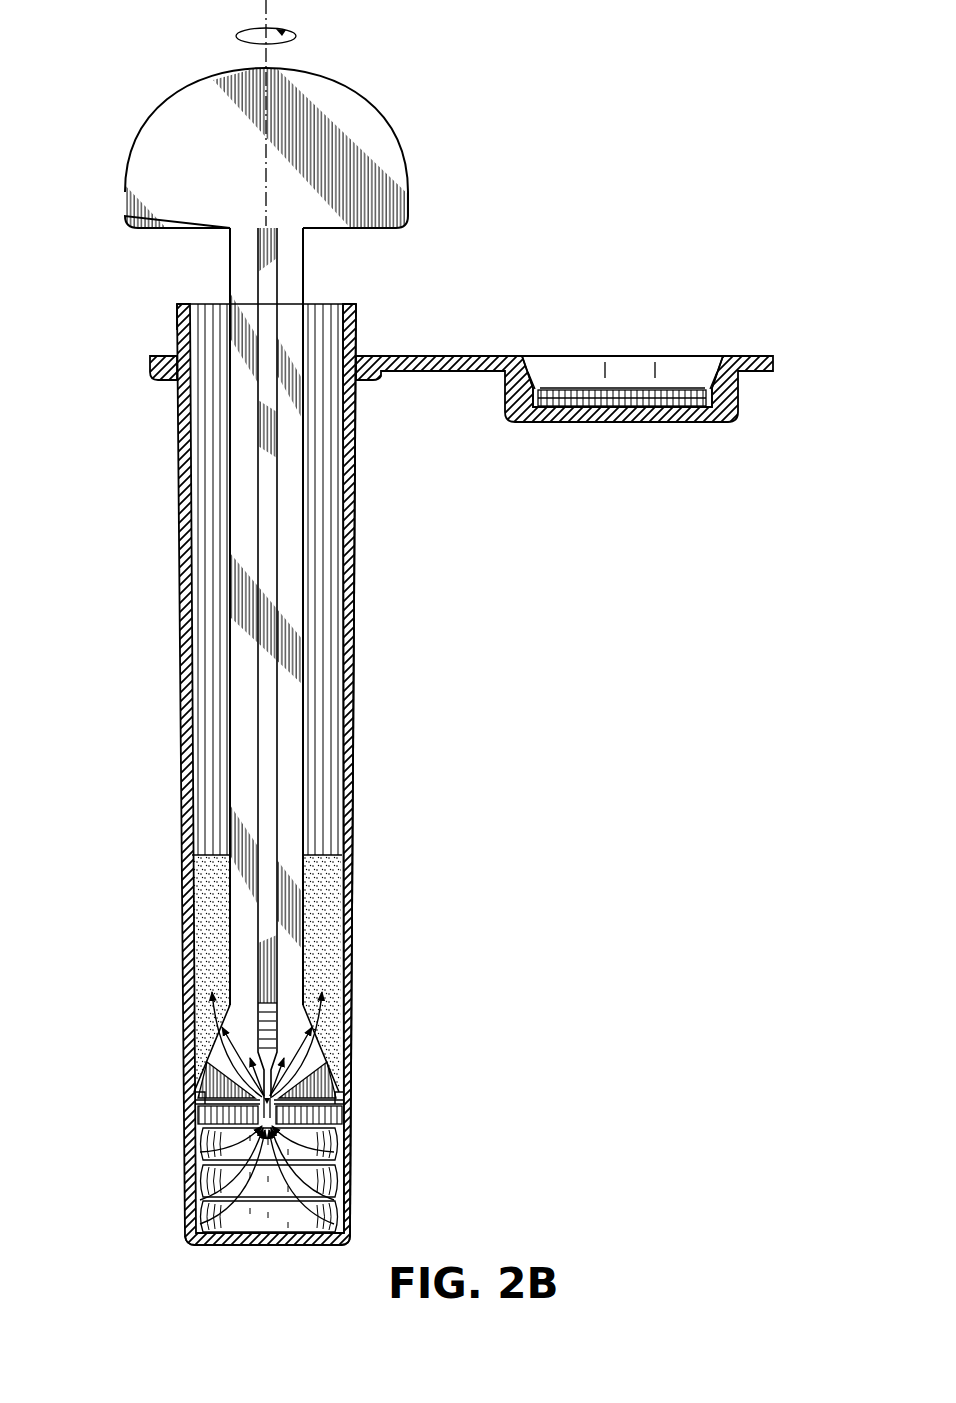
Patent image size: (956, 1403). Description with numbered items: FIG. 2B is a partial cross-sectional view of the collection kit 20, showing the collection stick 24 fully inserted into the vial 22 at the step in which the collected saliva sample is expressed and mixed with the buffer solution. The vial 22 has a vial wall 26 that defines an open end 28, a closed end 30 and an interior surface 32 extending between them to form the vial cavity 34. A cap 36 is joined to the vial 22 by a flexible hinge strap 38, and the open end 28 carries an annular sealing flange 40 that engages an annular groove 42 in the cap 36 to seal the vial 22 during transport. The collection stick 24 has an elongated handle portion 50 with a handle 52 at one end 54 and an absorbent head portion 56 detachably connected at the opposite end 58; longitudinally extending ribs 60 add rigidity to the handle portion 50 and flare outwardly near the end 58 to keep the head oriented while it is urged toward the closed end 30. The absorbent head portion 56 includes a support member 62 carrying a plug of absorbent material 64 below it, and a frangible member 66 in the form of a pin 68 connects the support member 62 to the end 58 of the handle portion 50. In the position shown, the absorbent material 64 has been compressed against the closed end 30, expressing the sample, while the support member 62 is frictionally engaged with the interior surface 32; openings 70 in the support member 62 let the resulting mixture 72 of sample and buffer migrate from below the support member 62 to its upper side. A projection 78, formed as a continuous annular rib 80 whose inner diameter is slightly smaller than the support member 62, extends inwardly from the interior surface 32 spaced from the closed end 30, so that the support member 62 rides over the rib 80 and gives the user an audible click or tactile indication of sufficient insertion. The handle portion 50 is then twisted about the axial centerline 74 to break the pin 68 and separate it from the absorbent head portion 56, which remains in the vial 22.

The collection kit 20 is at (566, 110).
The vial 22 is at (140, 711).
The collection stick 24 is at (118, 146).
The vial wall 26 is at (183, 797).
The open end 28 is at (199, 303).
The closed end 30 is at (212, 1249).
The interior surface 32 is at (345, 548).
The vial cavity 34 is at (322, 684).
The cap 36 is at (615, 423).
The hinge strap 38 is at (422, 370).
The annular sealing flange 40 is at (177, 312).
The annular groove 42 is at (706, 388).
The handle portion 50 is at (229, 465).
The handle 52 is at (368, 102).
The end of handle portion 54 is at (230, 249).
The absorbent head portion 56 is at (345, 1236).
The opposite end of handle portion 58 is at (337, 1040).
The longitudinally extending ribs 60 is at (262, 257).
The support member 62 is at (345, 1125).
The absorbent material 64 is at (207, 1210).
The frangible member 66 is at (281, 1102).
The pin 68 is at (200, 1060).
The openings 70 is at (202, 1139).
The mixture 72 is at (208, 958).
The axial centerline 74 is at (265, 163).
The projection 78 is at (200, 1103).
The annular rib 80 is at (333, 1077).